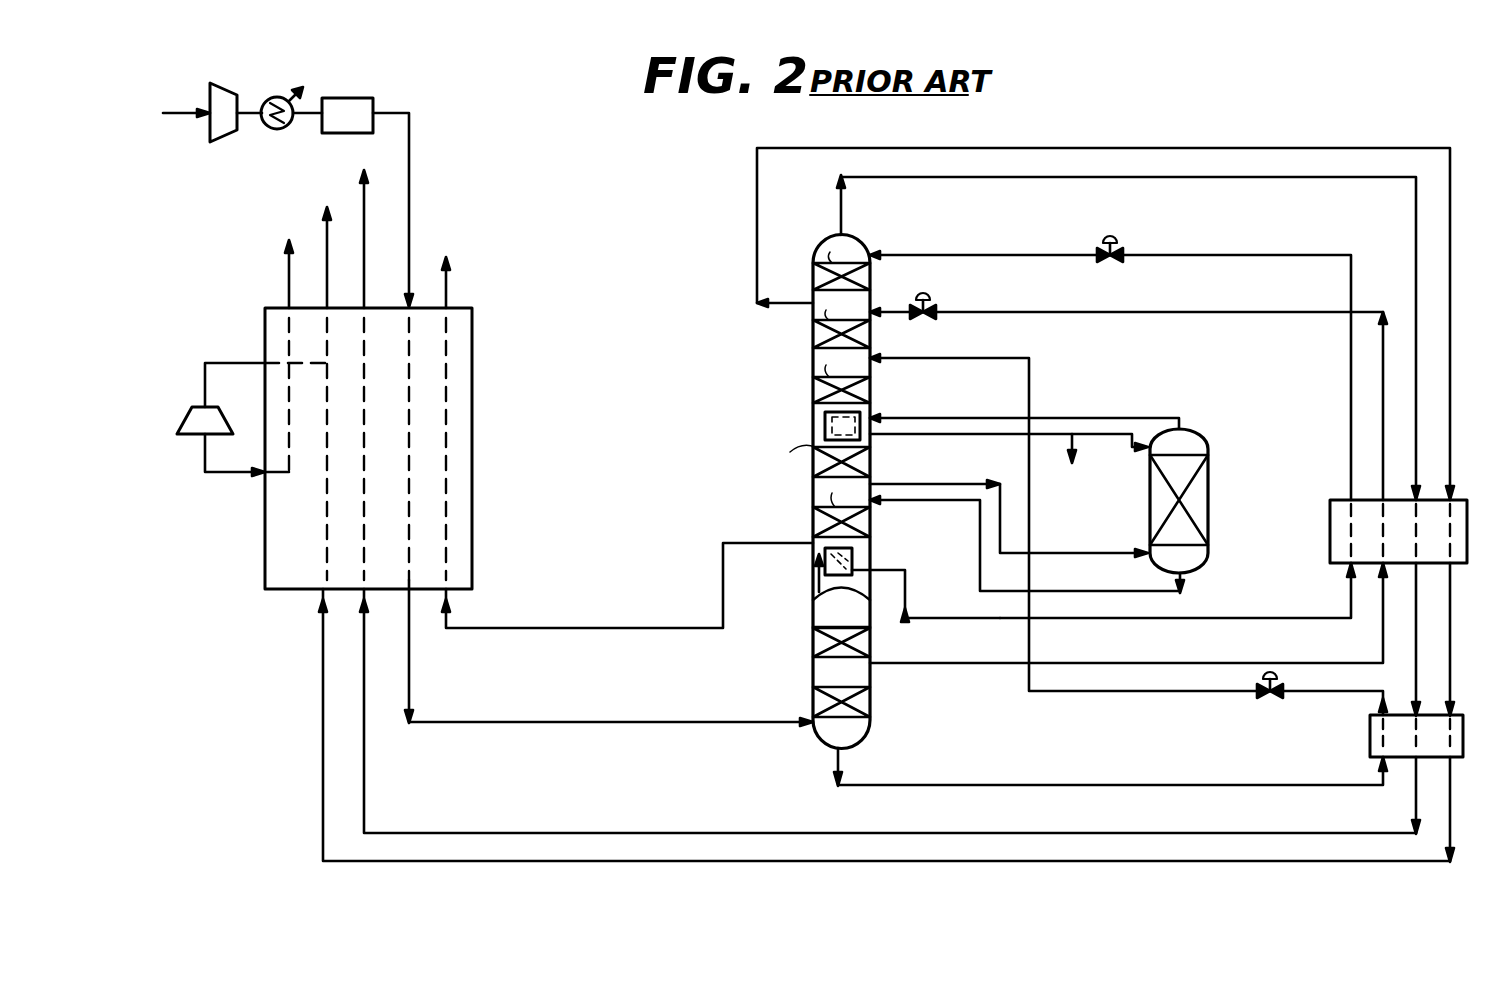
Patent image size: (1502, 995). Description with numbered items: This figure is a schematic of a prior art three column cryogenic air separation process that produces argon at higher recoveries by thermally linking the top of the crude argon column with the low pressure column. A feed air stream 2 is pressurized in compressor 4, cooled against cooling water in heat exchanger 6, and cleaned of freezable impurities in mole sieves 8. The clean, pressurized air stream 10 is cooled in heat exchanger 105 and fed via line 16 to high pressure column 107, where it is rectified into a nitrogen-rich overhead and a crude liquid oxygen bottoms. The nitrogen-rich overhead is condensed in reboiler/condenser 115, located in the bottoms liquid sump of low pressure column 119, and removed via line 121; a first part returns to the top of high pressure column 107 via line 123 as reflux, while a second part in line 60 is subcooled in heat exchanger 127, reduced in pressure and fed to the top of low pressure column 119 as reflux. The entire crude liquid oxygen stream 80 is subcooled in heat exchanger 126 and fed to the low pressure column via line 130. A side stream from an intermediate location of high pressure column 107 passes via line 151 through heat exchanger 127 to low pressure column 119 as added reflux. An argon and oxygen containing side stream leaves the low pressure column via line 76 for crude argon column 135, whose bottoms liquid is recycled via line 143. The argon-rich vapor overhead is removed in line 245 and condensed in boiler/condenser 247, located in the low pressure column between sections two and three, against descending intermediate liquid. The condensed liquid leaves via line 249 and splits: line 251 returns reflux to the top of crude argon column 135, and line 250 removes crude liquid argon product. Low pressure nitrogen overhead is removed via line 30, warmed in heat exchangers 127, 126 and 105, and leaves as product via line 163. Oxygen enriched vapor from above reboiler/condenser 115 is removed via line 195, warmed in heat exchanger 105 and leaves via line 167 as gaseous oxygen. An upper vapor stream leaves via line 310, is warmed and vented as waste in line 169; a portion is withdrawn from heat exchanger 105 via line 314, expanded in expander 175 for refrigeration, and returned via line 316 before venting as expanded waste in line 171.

The feed air stream 2 is at (189, 108).
The compressor 4 is at (220, 100).
The heat exchanger 6 is at (275, 98).
The mole sieves 8 is at (338, 98).
The clean, pressurized air stream 10 is at (413, 220).
The line 16 is at (556, 720).
The line 30 is at (846, 222).
The line 60 is at (1290, 618).
The line 76 is at (937, 484).
The line 80 is at (1184, 788).
The heat exchanger 105 is at (265, 558).
The high pressure column 107 is at (870, 678).
The reboiler/condenser 115 is at (853, 580).
The low pressure column 119 is at (806, 376).
The line 121 is at (900, 605).
The line 123 is at (890, 622).
The heat exchanger 126 is at (1369, 730).
The heat exchanger 127 is at (1362, 568).
The line 130 is at (926, 360).
The crude argon column 135 is at (1148, 480).
The line 143 is at (1104, 594).
The line 151 is at (1197, 666).
The line 163 is at (380, 214).
The line 167 is at (449, 292).
The line 169 is at (342, 244).
The line 171 is at (290, 272).
The expander 175 is at (190, 412).
The line 195 is at (774, 548).
The line 245 is at (1152, 418).
The boiler/condenser 247 is at (870, 418).
The line 249 is at (918, 434).
The line 250 is at (1076, 434).
The line 251 is at (1098, 433).
The line 310 is at (757, 226).
The line 314 is at (242, 363).
The line 316 is at (222, 474).